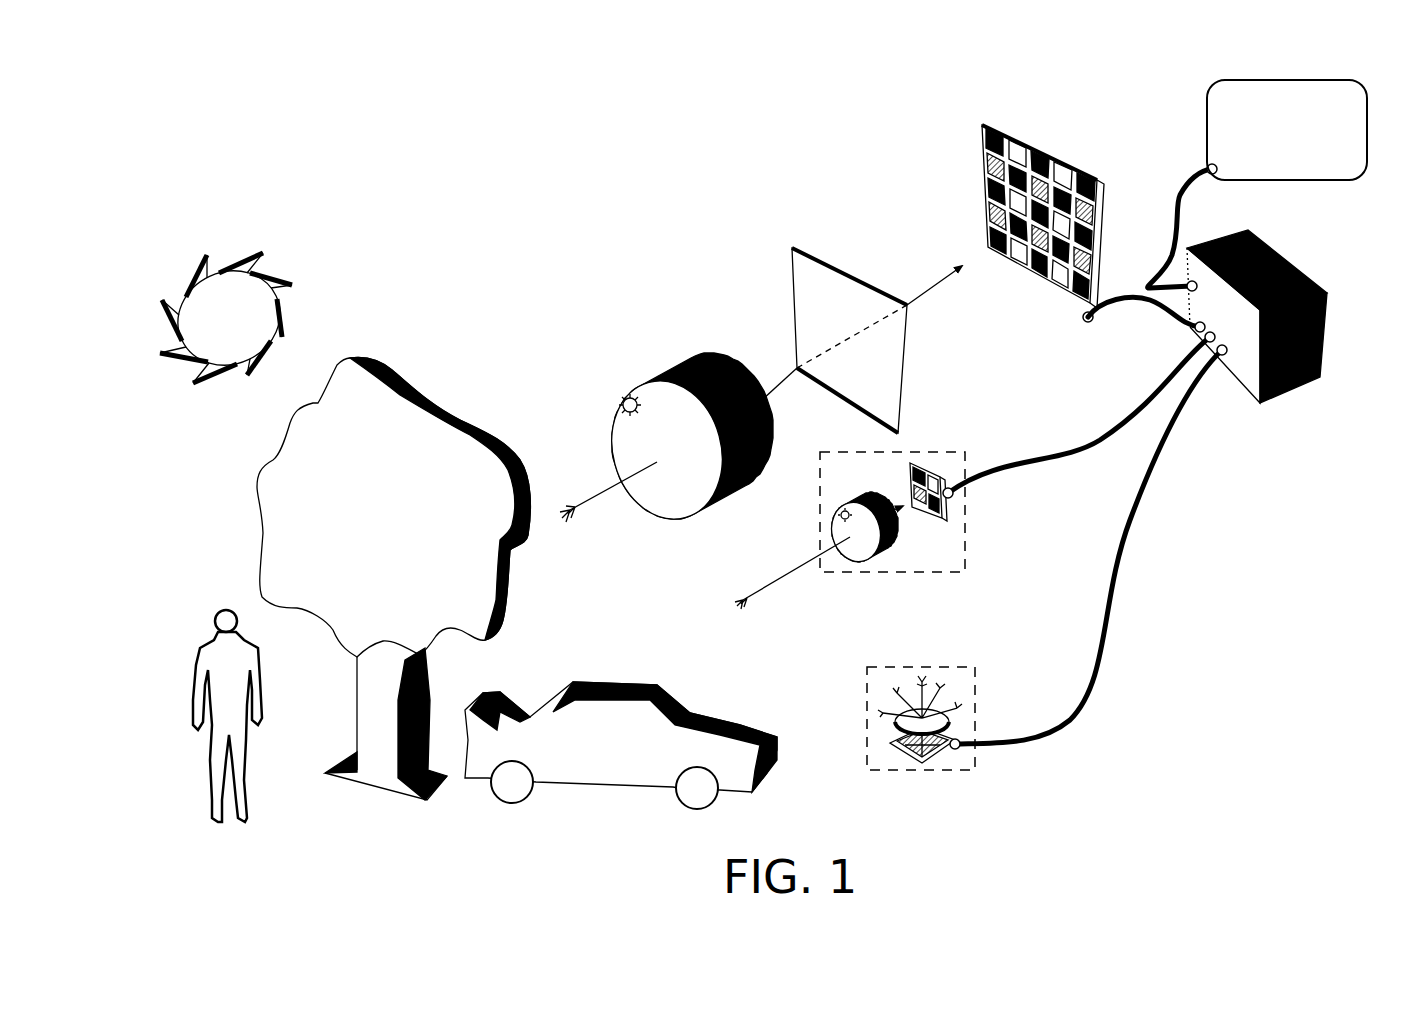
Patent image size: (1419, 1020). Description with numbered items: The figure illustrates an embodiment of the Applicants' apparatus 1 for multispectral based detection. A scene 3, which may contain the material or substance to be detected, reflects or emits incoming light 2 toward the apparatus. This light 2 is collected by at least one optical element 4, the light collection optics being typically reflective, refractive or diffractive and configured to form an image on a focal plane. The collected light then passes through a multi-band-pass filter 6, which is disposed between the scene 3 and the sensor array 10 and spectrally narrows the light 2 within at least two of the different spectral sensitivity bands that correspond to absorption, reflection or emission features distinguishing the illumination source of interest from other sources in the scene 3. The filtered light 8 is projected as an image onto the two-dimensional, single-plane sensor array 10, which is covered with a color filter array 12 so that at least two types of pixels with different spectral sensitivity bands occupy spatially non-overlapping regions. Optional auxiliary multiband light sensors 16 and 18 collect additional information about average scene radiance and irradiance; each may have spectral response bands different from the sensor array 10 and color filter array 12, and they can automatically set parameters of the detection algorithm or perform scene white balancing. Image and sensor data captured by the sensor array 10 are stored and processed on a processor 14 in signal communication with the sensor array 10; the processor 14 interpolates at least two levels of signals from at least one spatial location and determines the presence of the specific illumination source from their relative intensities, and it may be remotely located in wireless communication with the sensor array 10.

The apparatus 1 is at (590, 165).
The incoming light 2 is at (612, 483).
The scene 3 is at (407, 322).
The optical element 4 is at (663, 363).
The multi-band-pass filter 6 is at (905, 376).
The filtered light 8 is at (922, 296).
The sensor array 10 is at (1042, 155).
The color filter array 12 is at (1012, 204).
The processor 14 is at (1325, 341).
The multiband light sensor 16 is at (975, 693).
The multiband light sensor 18 is at (965, 510).